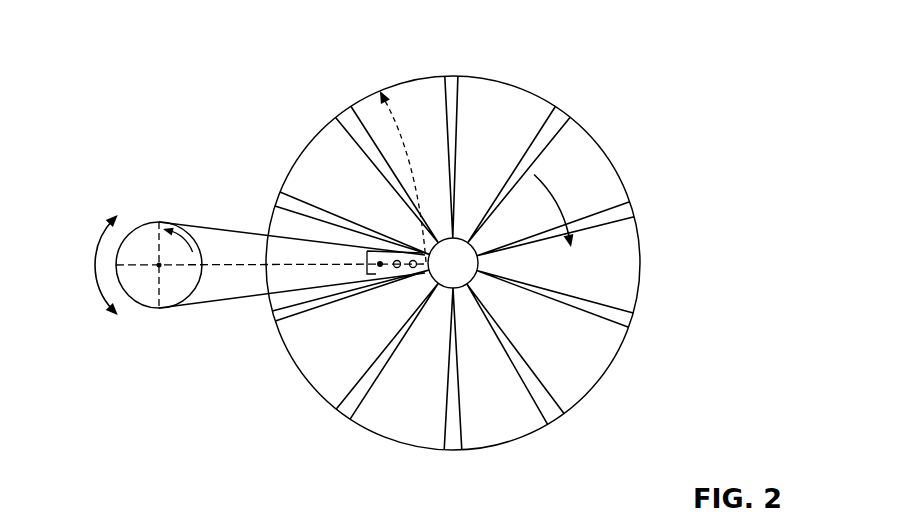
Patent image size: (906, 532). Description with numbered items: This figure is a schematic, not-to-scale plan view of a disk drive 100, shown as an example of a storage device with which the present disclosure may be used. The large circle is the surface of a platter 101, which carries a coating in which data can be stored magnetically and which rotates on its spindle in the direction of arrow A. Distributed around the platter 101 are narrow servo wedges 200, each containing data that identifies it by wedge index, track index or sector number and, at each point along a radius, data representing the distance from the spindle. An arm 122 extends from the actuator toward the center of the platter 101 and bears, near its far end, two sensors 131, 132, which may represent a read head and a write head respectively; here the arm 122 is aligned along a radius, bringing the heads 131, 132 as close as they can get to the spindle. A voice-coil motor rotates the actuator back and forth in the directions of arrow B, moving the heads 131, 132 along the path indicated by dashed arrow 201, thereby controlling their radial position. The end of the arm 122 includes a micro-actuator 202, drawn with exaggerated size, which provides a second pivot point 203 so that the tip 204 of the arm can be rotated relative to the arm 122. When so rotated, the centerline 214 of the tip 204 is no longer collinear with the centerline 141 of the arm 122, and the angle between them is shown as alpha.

The disk drive 100 is at (140, 38).
The platter 101 is at (381, 89).
The arm 122 is at (193, 224).
The sensor 131 is at (413, 268).
The sensor 132 is at (397, 268).
The centerline of the arm 141 is at (218, 263).
The servo wedge 200 is at (452, 88).
The dashed arrow 201 is at (402, 128).
The micro-actuator 202 is at (342, 264).
The second pivot point 203 is at (367, 252).
The tip of arm 204 is at (382, 251).
The centerline of tip 214 is at (264, 296).